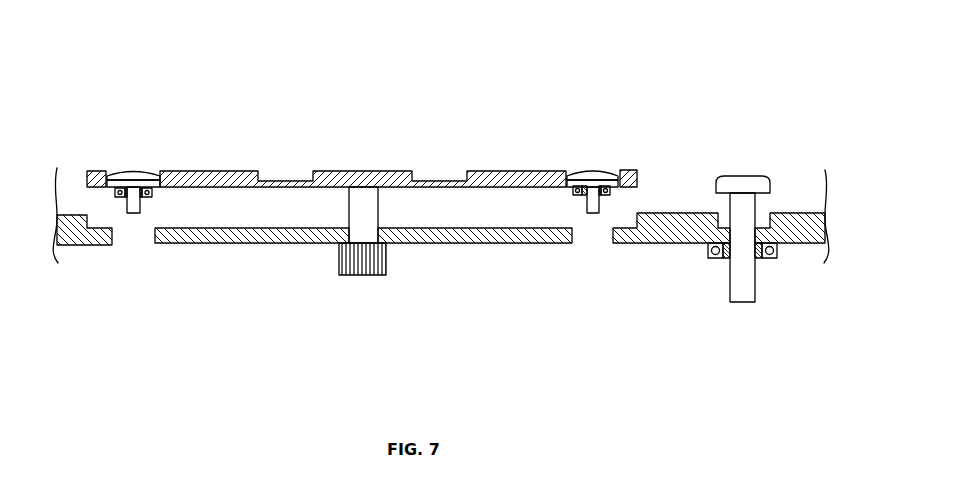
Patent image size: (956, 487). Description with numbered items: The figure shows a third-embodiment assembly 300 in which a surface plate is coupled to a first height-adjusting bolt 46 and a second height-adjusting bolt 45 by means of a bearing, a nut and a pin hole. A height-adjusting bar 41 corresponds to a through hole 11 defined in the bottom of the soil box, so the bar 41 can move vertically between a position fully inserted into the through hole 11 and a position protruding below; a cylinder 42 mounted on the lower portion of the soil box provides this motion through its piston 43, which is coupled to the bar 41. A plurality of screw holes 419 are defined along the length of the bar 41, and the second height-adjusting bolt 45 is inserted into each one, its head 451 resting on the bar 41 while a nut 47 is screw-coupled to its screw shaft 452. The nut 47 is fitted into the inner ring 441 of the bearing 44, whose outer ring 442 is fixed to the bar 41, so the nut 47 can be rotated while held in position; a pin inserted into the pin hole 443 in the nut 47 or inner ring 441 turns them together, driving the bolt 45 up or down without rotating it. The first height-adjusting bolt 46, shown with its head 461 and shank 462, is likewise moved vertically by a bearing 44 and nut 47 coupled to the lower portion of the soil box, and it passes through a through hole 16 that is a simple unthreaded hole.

The display device assembly 300 is at (134, 70).
The through hole 11 is at (316, 212).
The through hole 16 is at (134, 235).
The height-adjusting bar 41 is at (96, 171).
The screw hole 419 is at (567, 181).
The cylinder 42 is at (386, 262).
The piston 43 is at (378, 205).
The bearing 44 is at (115, 192).
The inner ring 441 is at (608, 196).
The outer ring 442 is at (611, 188).
The pin hole 443 is at (124, 197).
The second height-adjusting bolt 45 is at (128, 172).
The head 451 is at (600, 171).
The screw shaft 452 is at (637, 176).
The first height-adjusting bolt 46 is at (767, 212).
The bolt head 461 is at (742, 177).
The bolt shank 462 is at (756, 200).
The nut 47 is at (148, 197).